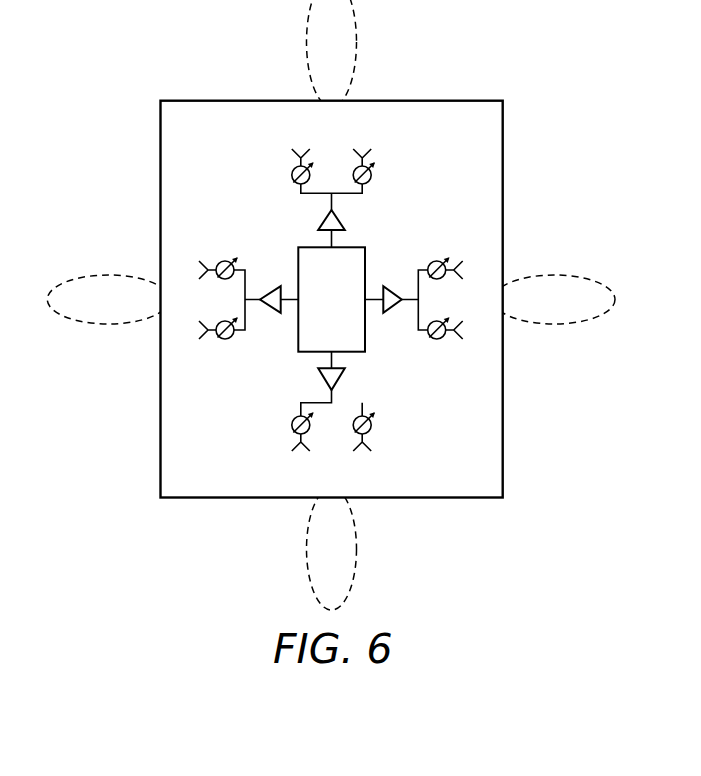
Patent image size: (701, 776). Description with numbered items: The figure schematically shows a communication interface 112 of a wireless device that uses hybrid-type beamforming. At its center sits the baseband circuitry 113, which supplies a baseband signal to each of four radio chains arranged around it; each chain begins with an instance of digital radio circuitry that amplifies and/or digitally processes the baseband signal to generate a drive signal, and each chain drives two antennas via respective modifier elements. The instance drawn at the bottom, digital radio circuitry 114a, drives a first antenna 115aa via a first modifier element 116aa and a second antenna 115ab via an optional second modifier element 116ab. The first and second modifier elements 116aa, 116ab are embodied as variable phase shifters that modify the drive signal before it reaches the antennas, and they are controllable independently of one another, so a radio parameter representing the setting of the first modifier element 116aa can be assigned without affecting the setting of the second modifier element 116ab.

The communication interface 112 is at (186, 499).
The baseband circuitry 113 is at (312, 309).
The digital radio circuitry 114a is at (318, 381).
The first antenna 115aa is at (297, 450).
The second antenna 115ab is at (366, 450).
The first modifier element 116aa is at (291, 425).
The second modifier element 116ab is at (372, 425).